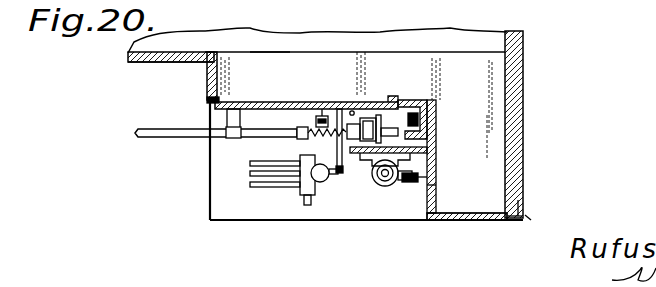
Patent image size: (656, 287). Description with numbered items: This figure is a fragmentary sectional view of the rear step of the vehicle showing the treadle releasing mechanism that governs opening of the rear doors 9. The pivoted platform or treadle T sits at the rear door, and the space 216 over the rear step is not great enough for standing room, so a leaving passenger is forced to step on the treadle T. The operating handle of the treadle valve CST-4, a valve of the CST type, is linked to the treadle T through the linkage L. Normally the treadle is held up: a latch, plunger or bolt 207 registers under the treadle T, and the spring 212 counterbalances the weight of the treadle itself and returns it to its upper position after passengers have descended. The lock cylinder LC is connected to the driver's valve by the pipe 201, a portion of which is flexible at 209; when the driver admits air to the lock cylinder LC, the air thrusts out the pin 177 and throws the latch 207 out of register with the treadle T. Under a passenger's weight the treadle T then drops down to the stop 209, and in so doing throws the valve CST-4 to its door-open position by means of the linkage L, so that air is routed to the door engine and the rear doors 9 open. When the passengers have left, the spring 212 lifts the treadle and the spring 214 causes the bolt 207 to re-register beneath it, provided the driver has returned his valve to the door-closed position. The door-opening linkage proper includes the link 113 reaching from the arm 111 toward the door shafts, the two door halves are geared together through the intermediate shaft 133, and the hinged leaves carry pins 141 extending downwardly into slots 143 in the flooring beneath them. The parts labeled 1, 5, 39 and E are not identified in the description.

The table top 1 is at (180, 72).
The cabinet cover 5 is at (266, 53).
The rear door 9 is at (515, 143).
The pin 141 is at (521, 218).
The slot 143 is at (530, 220).
The intermediate shaft 133 is at (532, 218).
The space over the rear step 216 is at (490, 210).
The treadle T is at (270, 102).
The pipe 201 is at (178, 138).
The spring 212 is at (318, 118).
The stop 209 is at (356, 107).
The lock cylinder LC is at (363, 112).
The spring 214 is at (430, 117).
The pin 177 is at (428, 100).
The latch 207 is at (413, 152).
The bearing E is at (389, 189).
The arm 111 is at (411, 184).
The link 113 is at (429, 192).
The rod 39 is at (350, 165).
The linkage L is at (351, 162).
The treadle valve CST-4 is at (326, 189).